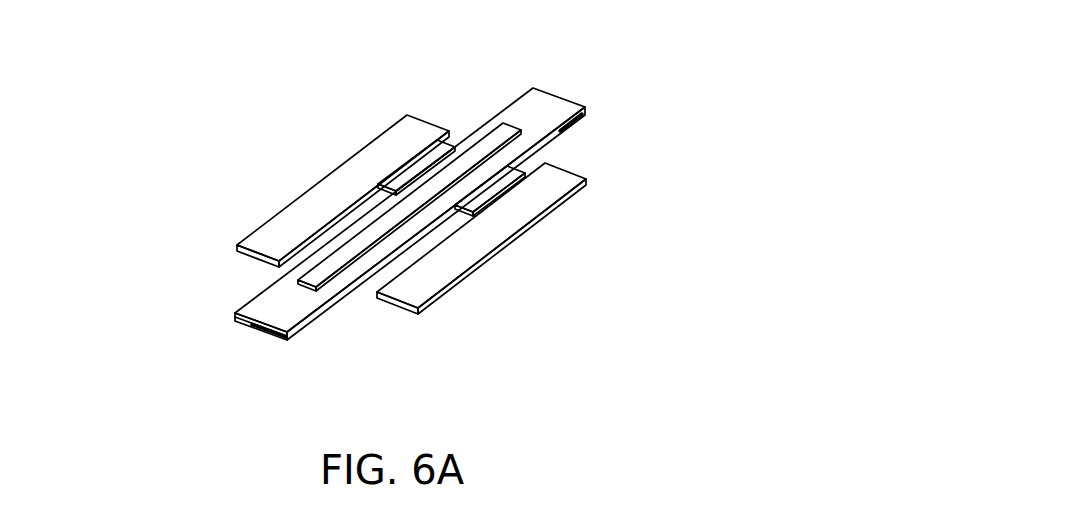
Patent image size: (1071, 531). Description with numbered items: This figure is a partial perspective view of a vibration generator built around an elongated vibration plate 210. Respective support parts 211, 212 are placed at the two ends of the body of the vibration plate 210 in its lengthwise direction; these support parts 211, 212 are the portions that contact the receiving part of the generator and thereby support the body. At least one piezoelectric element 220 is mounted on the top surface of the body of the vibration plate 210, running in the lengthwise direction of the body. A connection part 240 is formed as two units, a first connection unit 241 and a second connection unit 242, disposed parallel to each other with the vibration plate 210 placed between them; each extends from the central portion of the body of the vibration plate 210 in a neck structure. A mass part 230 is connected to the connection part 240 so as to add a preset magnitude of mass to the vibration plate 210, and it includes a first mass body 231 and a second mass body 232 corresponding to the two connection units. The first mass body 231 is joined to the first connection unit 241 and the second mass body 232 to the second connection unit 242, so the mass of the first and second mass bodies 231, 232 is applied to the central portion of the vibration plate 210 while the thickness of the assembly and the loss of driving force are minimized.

The vibration plate 210 is at (547, 103).
The support part 211 is at (290, 343).
The support part 212 is at (582, 126).
The piezoelectric element 220 is at (338, 254).
The mass part 230 is at (314, 245).
The first mass body 231 is at (273, 236).
The second mass body 232 is at (407, 288).
The connection part 240 is at (578, 168).
The first connection unit 241 is at (378, 192).
The second connection unit 242 is at (447, 223).